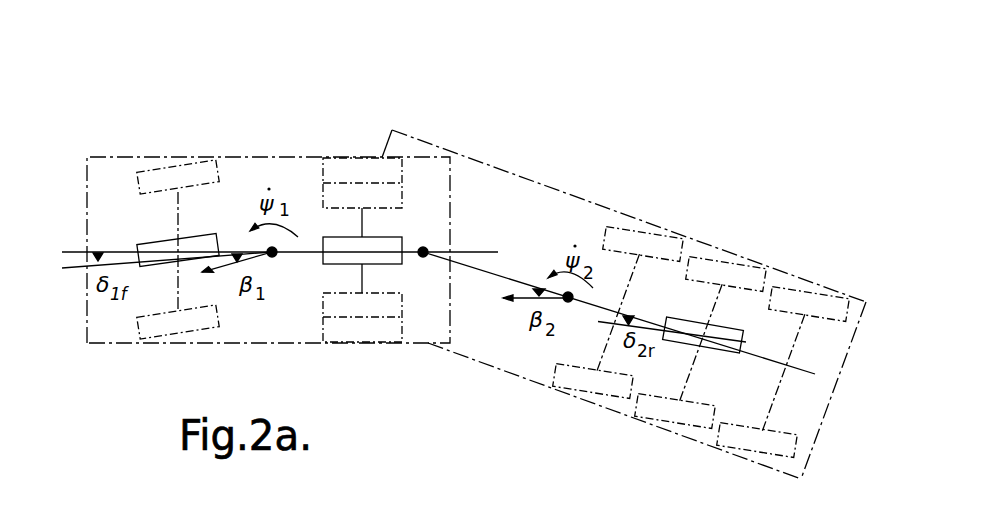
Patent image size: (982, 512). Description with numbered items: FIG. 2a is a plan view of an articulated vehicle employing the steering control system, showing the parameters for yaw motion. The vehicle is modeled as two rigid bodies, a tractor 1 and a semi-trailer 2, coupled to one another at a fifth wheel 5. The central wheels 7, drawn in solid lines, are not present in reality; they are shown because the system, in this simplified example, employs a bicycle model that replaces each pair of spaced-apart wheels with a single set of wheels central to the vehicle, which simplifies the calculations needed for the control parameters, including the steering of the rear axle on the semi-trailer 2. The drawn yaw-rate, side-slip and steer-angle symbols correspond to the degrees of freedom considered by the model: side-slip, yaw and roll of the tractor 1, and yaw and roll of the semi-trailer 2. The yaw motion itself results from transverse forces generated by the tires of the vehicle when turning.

The central wheels 7 is at (148, 243).
The tractor (vehicle unit 1) 1 is at (268, 236).
The semi-trailer (vehicle unit 2) 2 is at (624, 304).
The 5th wheel (fifth wheel coupling) 5 is at (427, 242).